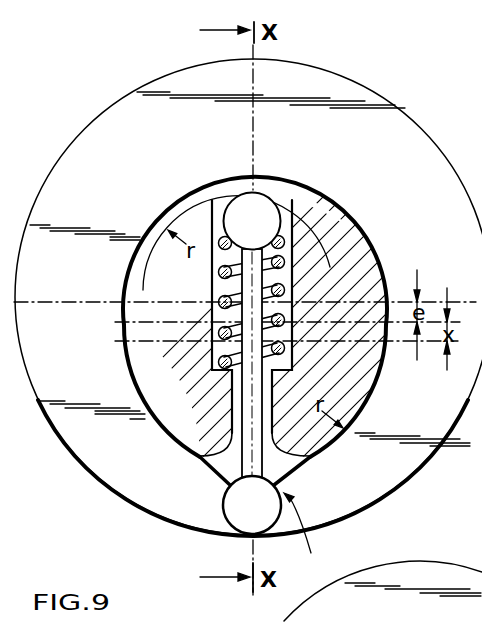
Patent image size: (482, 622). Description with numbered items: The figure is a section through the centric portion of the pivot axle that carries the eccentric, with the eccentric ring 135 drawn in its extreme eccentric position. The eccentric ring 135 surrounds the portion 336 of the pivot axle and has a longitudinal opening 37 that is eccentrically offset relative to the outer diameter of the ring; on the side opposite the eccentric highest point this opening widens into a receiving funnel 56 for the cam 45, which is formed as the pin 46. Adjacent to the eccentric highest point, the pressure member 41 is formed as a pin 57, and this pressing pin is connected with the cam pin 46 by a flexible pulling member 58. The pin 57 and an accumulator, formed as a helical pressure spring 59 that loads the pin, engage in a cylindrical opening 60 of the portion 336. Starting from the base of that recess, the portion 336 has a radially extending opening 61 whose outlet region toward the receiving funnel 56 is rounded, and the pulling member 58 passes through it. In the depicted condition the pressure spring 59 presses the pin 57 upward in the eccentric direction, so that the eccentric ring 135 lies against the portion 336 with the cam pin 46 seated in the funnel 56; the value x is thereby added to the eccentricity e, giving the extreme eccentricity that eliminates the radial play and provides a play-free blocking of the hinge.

The eccentric ring 135 is at (330, 92).
The longitudinal opening 37 is at (331, 214).
The pressure member 41 is at (274, 203).
The pin 57 is at (250, 213).
The helical pressure spring 59 is at (215, 246).
The cylindrical opening 60 is at (295, 277).
The radially extending opening 61 is at (250, 426).
The flexible pulling member 58 is at (200, 457).
The portion of the pivot axle 336 is at (310, 437).
The receiving funnel 56 is at (222, 503).
The pin 46 is at (245, 513).
The cam 45 is at (305, 536).